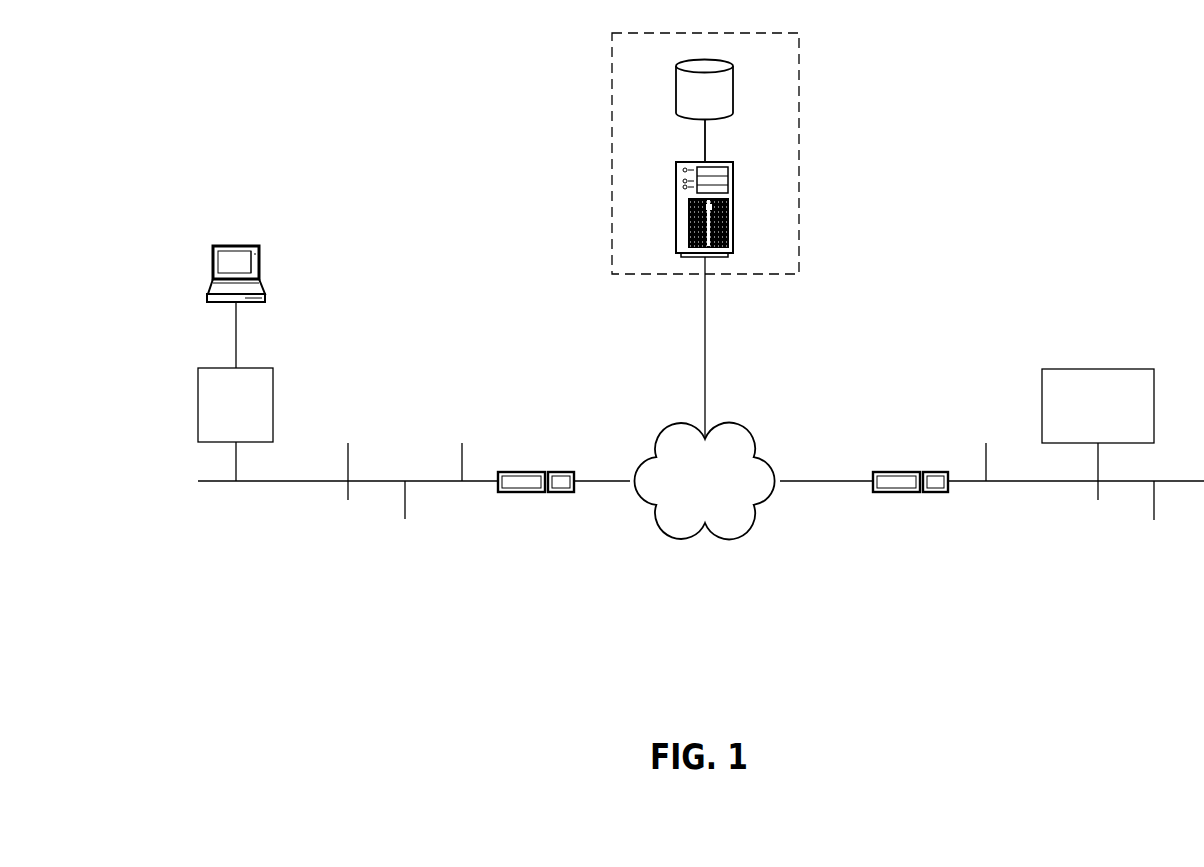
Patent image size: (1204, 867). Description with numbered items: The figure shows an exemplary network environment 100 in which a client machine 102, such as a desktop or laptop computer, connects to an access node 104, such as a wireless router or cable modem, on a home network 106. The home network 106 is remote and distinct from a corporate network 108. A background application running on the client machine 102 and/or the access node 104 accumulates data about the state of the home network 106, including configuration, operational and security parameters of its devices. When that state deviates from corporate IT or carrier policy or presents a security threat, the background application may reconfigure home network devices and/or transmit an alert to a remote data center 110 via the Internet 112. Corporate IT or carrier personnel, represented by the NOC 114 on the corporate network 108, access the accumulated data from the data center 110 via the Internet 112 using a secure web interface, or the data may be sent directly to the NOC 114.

The network environment 100 is at (1020, 113).
The client machine 102 is at (213, 275).
The access node 104 is at (235, 424).
The home network 106 is at (293, 481).
The corporate network 108 is at (1042, 481).
The remote data center 110 is at (799, 143).
The Internet 112 is at (704, 481).
The NOC 114 is at (1098, 434).